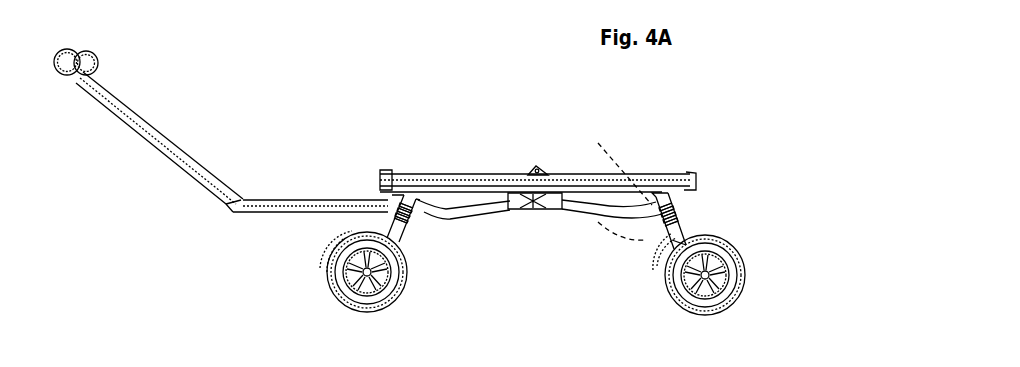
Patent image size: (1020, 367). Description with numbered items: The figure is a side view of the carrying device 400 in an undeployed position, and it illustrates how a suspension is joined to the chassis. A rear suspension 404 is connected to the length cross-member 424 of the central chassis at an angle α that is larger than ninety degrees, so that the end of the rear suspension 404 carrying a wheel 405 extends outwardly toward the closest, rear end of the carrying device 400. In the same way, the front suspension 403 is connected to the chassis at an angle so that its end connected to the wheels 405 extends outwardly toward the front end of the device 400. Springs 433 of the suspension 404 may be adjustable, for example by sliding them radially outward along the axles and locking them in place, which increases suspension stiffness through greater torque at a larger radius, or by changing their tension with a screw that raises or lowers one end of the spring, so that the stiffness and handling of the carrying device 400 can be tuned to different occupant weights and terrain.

The carrying device 400 is at (677, 125).
The front suspension 403 is at (335, 232).
The rear suspension 404 is at (663, 243).
The wheel 405 is at (405, 250).
The length cross-member 424 is at (565, 208).
The springs 433 is at (677, 208).